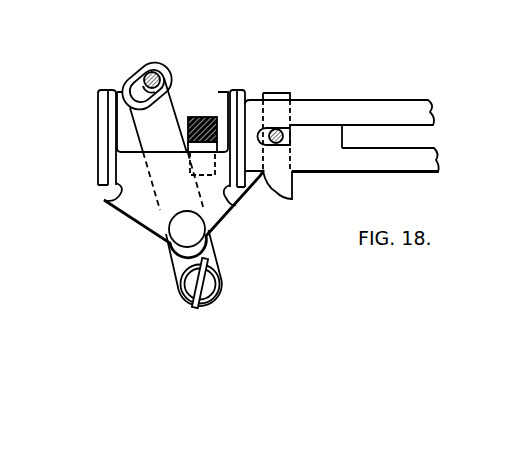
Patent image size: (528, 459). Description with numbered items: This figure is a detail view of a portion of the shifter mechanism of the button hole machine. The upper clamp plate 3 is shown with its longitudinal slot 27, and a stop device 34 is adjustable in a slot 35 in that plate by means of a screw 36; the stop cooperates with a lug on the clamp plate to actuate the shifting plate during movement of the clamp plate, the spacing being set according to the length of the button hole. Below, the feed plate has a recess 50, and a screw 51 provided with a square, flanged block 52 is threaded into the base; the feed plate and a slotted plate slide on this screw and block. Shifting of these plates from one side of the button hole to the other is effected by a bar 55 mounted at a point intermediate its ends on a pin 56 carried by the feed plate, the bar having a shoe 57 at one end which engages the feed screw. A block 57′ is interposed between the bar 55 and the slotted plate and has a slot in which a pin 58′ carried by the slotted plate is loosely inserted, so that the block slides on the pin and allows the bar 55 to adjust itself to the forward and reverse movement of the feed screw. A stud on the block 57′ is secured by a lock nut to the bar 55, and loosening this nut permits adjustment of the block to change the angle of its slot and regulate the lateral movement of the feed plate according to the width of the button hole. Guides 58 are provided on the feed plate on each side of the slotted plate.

The upper clamp plate 3 is at (350, 168).
The longitudinal slot 27 is at (372, 145).
The stop device 34 is at (308, 195).
The slot 35 is at (298, 140).
The screw 36 is at (288, 134).
The recess 50 is at (125, 137).
The screw 51 is at (199, 117).
The square flanged block 52 is at (188, 121).
The bar 55 is at (183, 261).
The pin 56 is at (192, 230).
The shoe 57 is at (203, 278).
The block 57′ is at (76, 0).
The guides 58 is at (105, 198).
The pin 58′ is at (162, 74).